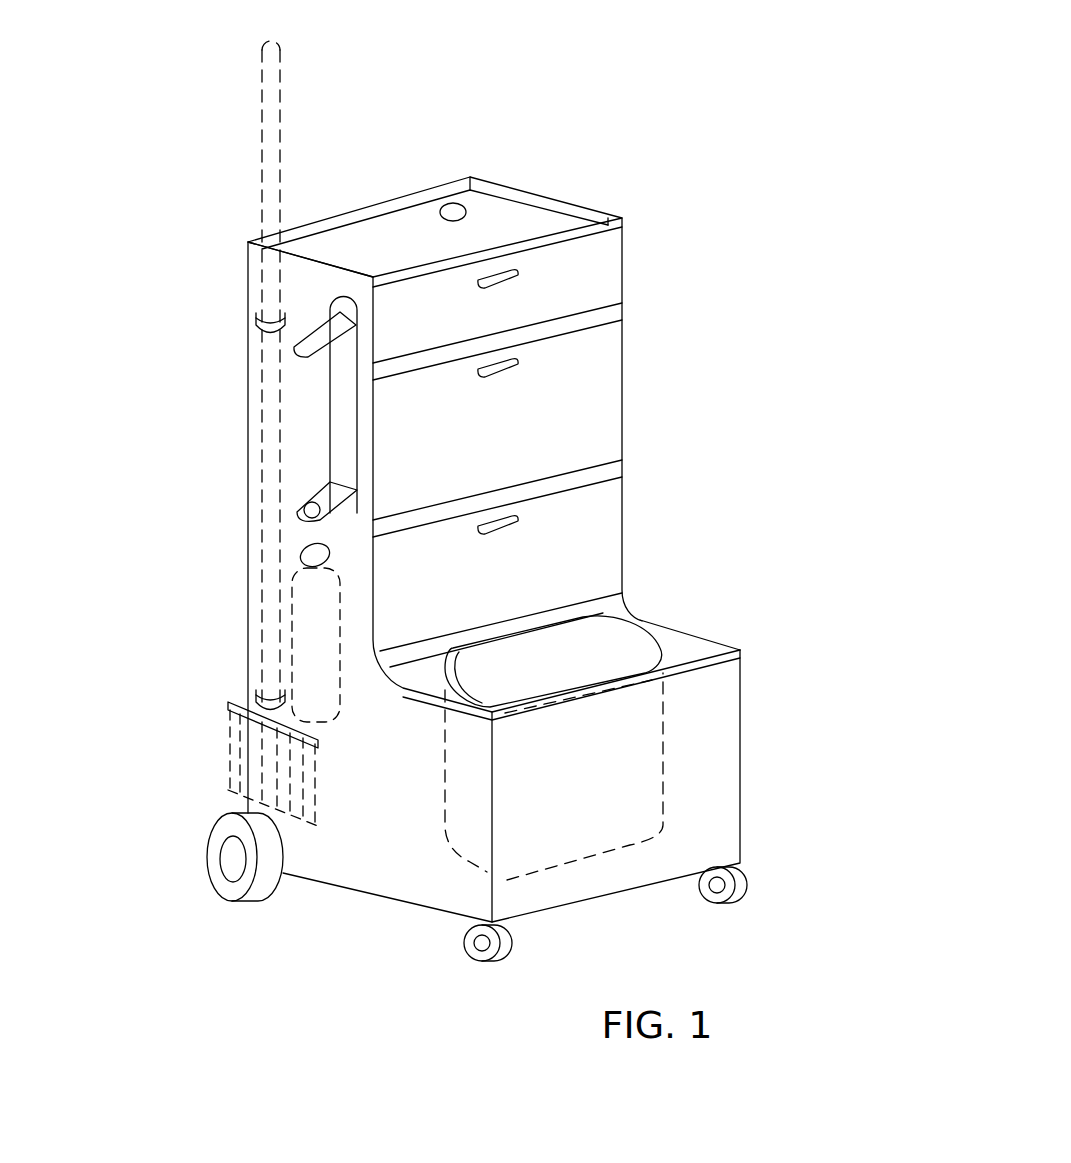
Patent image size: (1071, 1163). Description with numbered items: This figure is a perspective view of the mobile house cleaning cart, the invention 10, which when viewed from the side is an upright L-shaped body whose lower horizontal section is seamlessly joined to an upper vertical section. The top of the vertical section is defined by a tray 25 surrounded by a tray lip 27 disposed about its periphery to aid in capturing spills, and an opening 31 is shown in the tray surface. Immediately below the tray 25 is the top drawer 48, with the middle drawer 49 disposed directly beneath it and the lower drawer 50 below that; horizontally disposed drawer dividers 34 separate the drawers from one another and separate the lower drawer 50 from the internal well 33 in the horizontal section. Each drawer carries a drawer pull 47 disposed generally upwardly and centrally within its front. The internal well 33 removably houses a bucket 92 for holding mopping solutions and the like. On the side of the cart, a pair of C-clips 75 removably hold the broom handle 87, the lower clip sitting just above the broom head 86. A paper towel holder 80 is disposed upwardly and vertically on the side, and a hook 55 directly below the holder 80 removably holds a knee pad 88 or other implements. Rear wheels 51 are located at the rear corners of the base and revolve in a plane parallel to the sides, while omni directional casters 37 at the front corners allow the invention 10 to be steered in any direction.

The invention 10 is at (712, 96).
The tray 25 is at (515, 200).
The tray lip 27 is at (613, 217).
The cup holder opening 31 is at (450, 204).
The top drawer 48 is at (620, 255).
The drawer divider 34 is at (615, 313).
The middle drawer 49 is at (623, 390).
The lower drawer 50 is at (613, 522).
The drawer pull 47 is at (500, 283).
The internal well 33 is at (718, 632).
The bucket 92 is at (633, 630).
The omni directional caster 37 is at (747, 877).
The rear wheel 51 is at (245, 898).
The broom head 86 is at (182, 730).
The broom handle 87 is at (265, 168).
The C-clip 75 is at (257, 327).
The paper towel holder 80 is at (343, 367).
The hook 55 is at (310, 547).
The knee pad 88 is at (293, 597).